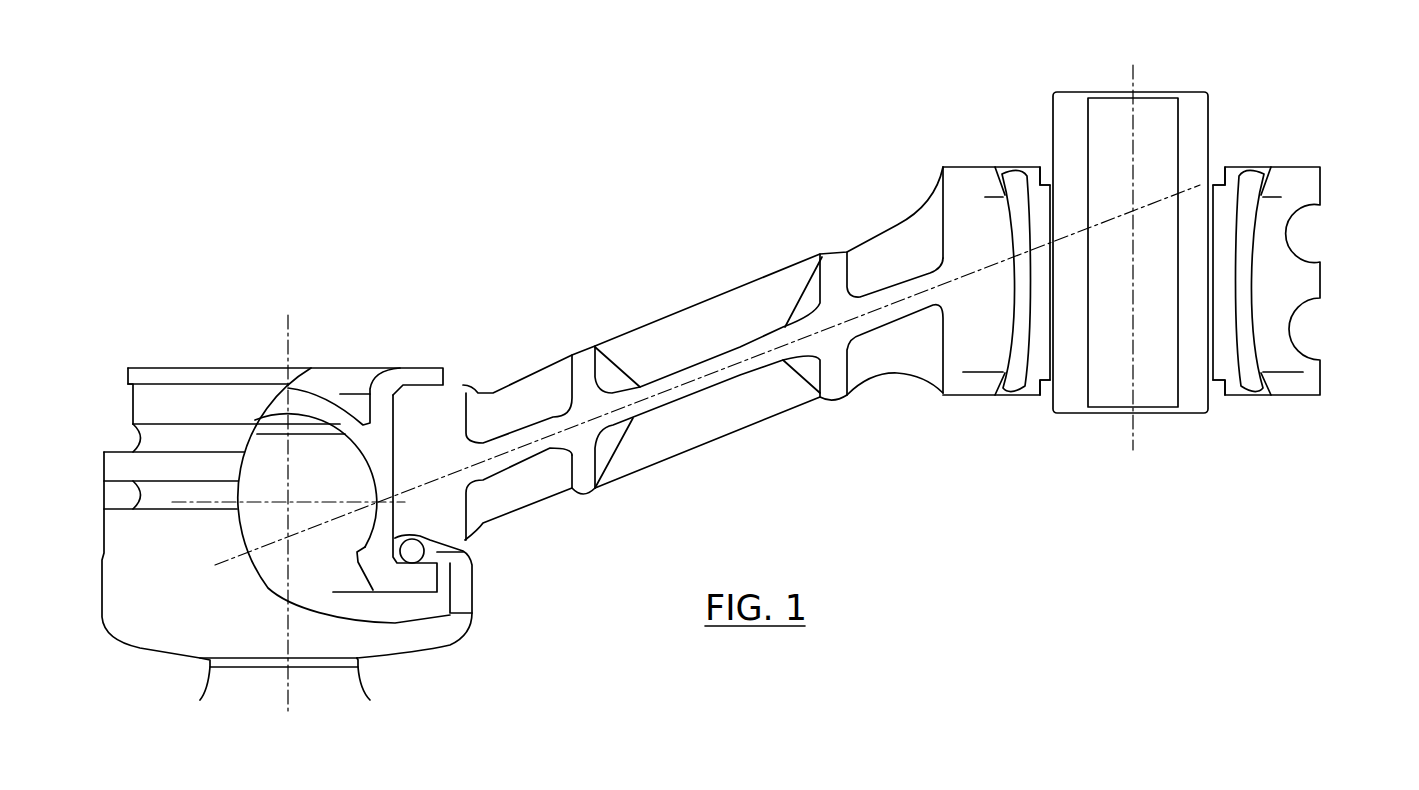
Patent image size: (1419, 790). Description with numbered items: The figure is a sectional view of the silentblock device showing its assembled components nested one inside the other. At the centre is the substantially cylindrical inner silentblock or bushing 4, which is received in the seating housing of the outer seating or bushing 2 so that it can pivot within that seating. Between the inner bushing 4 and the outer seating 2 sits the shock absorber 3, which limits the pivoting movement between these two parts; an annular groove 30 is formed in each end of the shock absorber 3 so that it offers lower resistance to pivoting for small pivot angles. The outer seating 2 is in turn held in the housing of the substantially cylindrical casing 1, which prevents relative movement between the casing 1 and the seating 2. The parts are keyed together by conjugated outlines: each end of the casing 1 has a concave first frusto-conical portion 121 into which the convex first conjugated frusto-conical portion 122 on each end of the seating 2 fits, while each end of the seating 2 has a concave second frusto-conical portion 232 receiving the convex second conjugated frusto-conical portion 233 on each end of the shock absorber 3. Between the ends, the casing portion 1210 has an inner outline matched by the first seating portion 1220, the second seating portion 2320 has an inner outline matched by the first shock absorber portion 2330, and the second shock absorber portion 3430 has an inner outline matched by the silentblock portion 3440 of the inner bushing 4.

The casing 1 is at (1300, 177).
The outer seating or bushing 2 is at (1020, 313).
The shock absorber 3 is at (1047, 287).
The inner silentblock or bushing 4 is at (1197, 107).
The annular groove 30 is at (1045, 167).
The first frusto-conical portion 121 is at (993, 195).
The first conjugated frusto-conical portion 122 is at (996, 281).
The casing portion 1210 is at (1010, 288).
The first seating portion 1220 is at (1173, 280).
The second frusto-conical portion 232 is at (1027, 173).
The second conjugated frusto-conical portion 233 is at (1207, 280).
The second seating portion 2320 is at (1030, 258).
The first shock absorber portion 2330 is at (1133, 280).
The second shock absorber portion 3430 is at (1208, 204).
The silentblock portion 3440 is at (1130, 252).